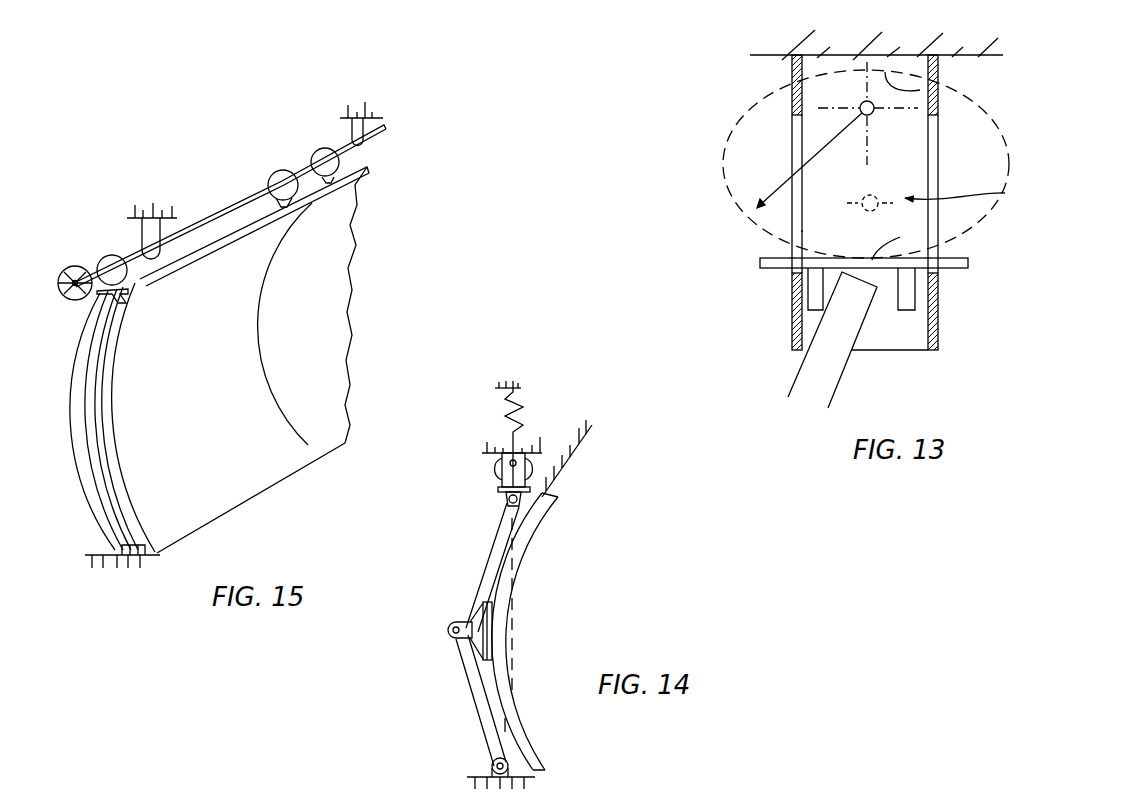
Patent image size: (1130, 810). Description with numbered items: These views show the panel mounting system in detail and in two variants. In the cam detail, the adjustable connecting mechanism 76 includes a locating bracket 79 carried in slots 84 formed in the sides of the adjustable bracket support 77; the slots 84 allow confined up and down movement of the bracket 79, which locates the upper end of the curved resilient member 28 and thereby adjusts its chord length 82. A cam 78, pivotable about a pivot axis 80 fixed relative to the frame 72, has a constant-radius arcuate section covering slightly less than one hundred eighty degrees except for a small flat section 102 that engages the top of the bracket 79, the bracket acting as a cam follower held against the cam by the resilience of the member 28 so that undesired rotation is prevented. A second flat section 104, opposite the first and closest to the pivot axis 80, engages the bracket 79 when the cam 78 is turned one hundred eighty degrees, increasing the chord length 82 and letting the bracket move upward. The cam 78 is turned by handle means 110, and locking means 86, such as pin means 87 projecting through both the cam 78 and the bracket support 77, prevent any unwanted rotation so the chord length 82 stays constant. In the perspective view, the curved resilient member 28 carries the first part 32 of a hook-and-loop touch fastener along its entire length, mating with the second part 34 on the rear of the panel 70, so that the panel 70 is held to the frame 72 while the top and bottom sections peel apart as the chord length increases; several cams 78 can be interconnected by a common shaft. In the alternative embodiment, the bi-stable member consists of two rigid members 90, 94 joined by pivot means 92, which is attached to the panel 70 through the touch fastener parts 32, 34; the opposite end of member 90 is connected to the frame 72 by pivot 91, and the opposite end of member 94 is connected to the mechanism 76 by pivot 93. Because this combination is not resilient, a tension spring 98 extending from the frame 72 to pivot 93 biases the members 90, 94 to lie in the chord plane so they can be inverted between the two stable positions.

In FIG. 15, the curved resilient member 28 is at (86, 327).
In FIG. 15, the first part of touch fastener 32 is at (97, 472).
In FIG. 15, the second part of touch fastener 34 is at (107, 485).
In FIG. 13, the panel 70 is at (815, 384).
In FIG. 14, the panel 70 is at (522, 580).
In FIG. 15, the panel 70 is at (262, 478).
In FIG. 13, the frame 72 is at (770, 55).
In FIG. 14, the frame 72 is at (490, 451).
In FIG. 15, the frame 72 is at (147, 218).
In FIG. 13, the adjustable connecting mechanism 76 is at (684, 324).
In FIG. 14, the adjustable connecting mechanism 76 is at (486, 503).
In FIG. 15, the adjustable connecting mechanism 76 is at (92, 300).
In FIG. 13, the adjustable bracket support 77 is at (900, 336).
In FIG. 13, the cam 78 is at (732, 163).
In FIG. 15, the cam 78 is at (113, 256).
In FIG. 13, the locating bracket 79 is at (965, 262).
In FIG. 13, the pivot axis 80 is at (877, 110).
In FIG. 14, the chord length 82 is at (505, 718).
In FIG. 13, the slots 84 is at (792, 228).
In FIG. 13, the locking means 86 is at (1005, 193).
In FIG. 13, the pin means 87 is at (847, 203).
In FIG. 14, the rigid member 90 is at (471, 693).
In FIG. 14, the pivot 91 is at (495, 762).
In FIG. 14, the pivot means 92 is at (447, 630).
In FIG. 14, the pivot 93 is at (508, 500).
In FIG. 14, the rigid member 94 is at (487, 553).
In FIG. 14, the tension spring 98 is at (522, 405).
In FIG. 13, the flat section 102 is at (900, 237).
In FIG. 13, the flat section 104 is at (920, 90).
In FIG. 15, the handle means 110 is at (75, 268).